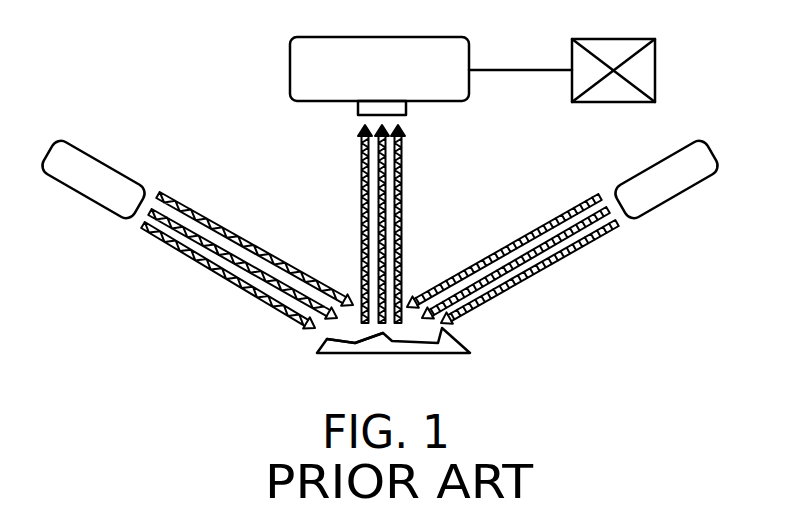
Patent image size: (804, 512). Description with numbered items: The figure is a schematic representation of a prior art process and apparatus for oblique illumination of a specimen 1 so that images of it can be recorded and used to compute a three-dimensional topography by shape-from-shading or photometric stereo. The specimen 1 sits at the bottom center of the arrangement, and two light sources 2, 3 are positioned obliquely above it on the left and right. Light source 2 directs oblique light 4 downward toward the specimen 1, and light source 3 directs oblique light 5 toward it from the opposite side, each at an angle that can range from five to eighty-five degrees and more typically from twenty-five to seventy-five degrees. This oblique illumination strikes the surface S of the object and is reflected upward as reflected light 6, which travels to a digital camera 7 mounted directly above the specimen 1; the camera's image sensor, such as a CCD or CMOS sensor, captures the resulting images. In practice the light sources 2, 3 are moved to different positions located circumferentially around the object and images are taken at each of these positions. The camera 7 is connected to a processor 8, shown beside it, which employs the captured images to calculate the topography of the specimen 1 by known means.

The specimen 1 is at (425, 358).
The light source 2 is at (127, 182).
The light source 3 is at (676, 180).
The oblique light 4 is at (218, 263).
The oblique light 5 is at (523, 277).
The reflected light 6 is at (400, 205).
The digital camera 7 is at (443, 45).
The processor 8 is at (637, 69).
The surface S is at (355, 343).